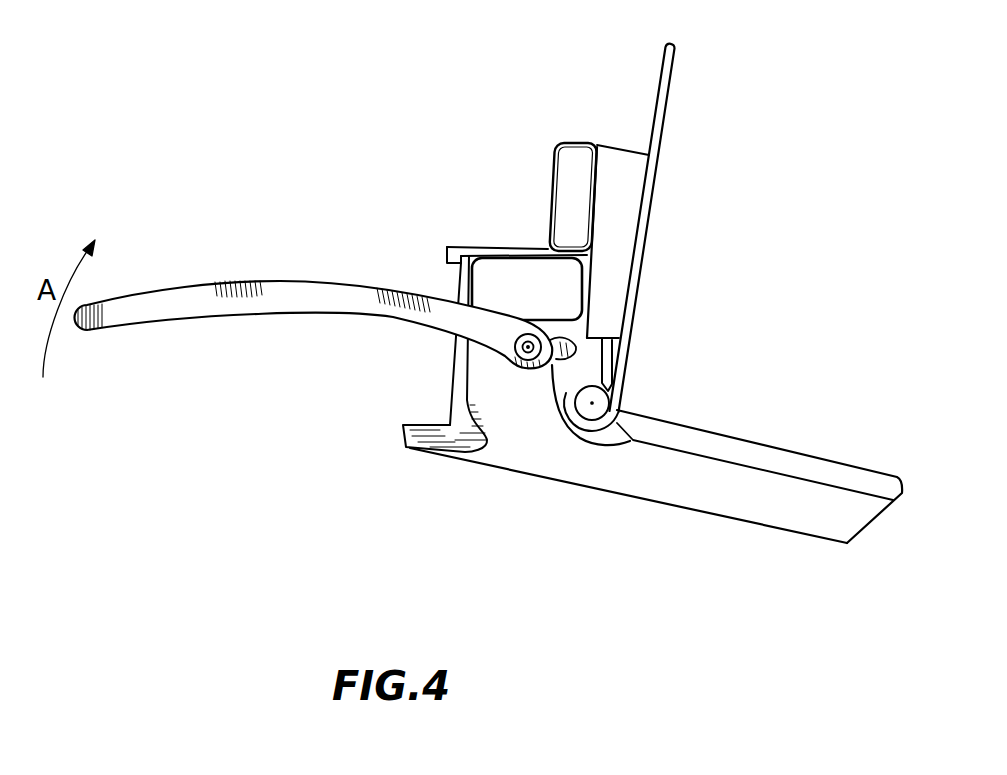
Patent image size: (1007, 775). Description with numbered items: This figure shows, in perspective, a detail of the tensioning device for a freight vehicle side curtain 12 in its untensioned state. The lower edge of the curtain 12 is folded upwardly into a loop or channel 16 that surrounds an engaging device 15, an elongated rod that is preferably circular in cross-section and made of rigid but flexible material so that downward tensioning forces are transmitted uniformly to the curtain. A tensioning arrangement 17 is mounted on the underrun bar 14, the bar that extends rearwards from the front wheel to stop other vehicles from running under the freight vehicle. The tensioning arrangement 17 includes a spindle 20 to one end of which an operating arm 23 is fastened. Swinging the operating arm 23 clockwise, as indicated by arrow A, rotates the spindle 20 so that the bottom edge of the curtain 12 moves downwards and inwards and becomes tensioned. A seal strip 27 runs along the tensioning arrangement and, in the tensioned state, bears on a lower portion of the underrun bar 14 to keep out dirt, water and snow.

The side curtain 12 is at (745, 249).
The underrun bar 14 is at (478, 480).
The engaging device 15 is at (583, 405).
The loop or channel 16 is at (617, 406).
The tensioning arrangement 17 is at (500, 387).
The spindle 20 is at (592, 357).
The operating arm 23 is at (198, 310).
The seal strip 27 is at (815, 466).